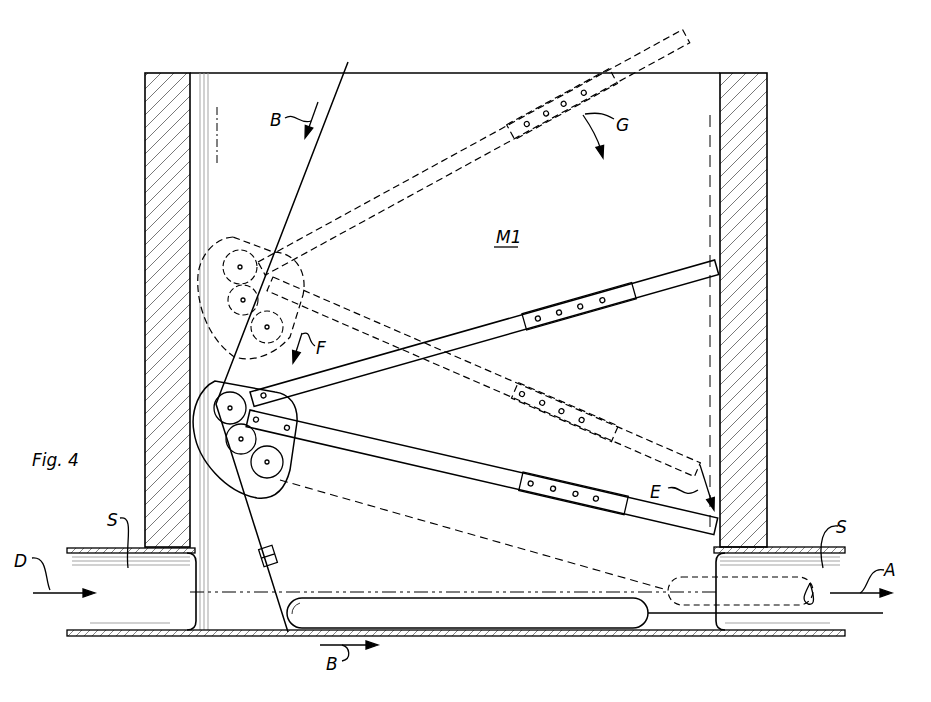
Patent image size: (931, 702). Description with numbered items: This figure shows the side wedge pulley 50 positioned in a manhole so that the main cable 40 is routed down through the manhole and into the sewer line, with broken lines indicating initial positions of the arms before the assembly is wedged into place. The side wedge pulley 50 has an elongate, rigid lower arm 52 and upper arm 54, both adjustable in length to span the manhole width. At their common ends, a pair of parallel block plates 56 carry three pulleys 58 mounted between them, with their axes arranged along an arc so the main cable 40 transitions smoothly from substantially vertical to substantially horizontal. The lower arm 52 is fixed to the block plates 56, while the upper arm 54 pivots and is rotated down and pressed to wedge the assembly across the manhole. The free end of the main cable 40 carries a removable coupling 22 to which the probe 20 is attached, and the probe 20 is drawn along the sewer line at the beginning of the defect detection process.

The probe 20 is at (533, 622).
The removable coupling 22 is at (246, 566).
The main cable 40 is at (348, 62).
The side wedge pulley 50 is at (482, 309).
The lower arm 52 is at (480, 386).
The upper arm 54 is at (410, 179).
The block plates 56 is at (243, 232).
The pulleys 58 is at (217, 389).